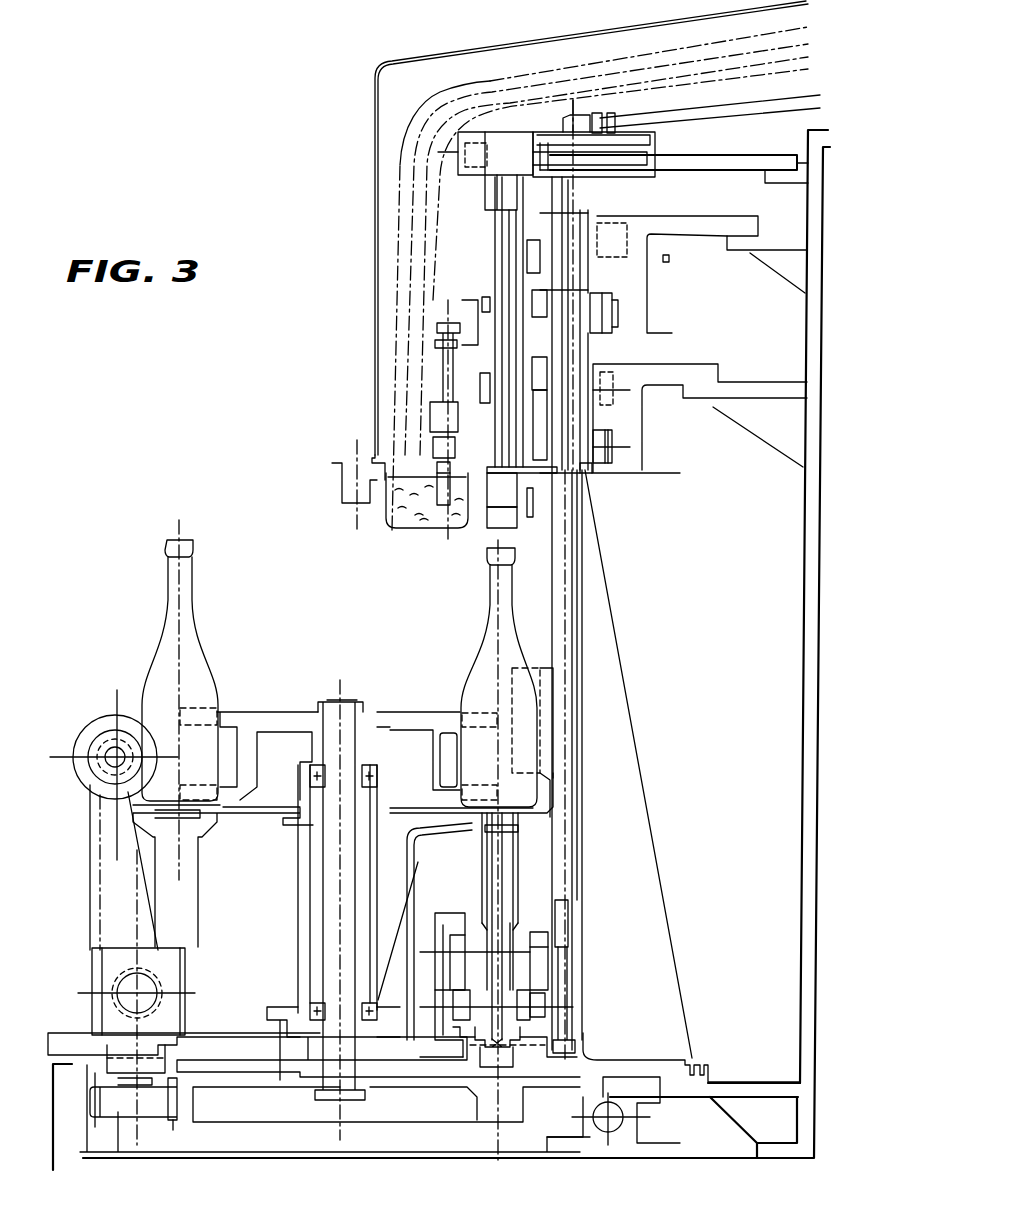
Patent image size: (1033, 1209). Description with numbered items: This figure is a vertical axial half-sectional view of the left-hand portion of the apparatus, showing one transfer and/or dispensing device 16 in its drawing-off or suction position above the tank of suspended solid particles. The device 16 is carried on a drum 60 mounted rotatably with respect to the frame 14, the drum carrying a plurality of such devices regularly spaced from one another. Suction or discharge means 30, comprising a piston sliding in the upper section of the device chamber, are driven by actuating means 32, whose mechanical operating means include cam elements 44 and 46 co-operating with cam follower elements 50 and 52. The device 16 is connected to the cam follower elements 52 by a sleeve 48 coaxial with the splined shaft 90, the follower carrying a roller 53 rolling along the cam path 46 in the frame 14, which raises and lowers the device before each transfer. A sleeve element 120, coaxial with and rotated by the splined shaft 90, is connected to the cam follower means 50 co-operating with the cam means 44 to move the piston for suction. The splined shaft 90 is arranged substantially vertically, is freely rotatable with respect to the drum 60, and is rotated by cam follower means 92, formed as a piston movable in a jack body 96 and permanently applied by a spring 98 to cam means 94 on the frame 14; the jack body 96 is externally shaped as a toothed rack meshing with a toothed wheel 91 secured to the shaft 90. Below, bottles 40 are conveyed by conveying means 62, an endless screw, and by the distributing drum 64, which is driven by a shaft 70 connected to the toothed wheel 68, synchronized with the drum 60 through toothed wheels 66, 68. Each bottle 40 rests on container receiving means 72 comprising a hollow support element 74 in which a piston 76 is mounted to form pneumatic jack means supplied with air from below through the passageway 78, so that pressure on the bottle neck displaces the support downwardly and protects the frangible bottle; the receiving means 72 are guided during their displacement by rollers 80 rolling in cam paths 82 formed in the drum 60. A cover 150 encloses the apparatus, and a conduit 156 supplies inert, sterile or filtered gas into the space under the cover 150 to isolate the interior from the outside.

The frame 14 is at (800, 583).
The transfer and/or dispensing device 16 is at (438, 440).
The suction or discharge means 30 is at (440, 377).
The actuating means 32 is at (586, 256).
The bottle 40 is at (197, 670).
The cam element 44 is at (620, 328).
The cam element 46 is at (613, 463).
The sleeve 48 is at (460, 453).
The cam follower element 50 is at (582, 307).
The cam follower element 52 is at (573, 467).
The roller 53 is at (614, 437).
The drum 60 is at (647, 1055).
The conveying means 62 is at (103, 723).
The distributing drum 64 is at (300, 710).
The toothed wheel 66 is at (147, 1103).
The toothed wheel 68 is at (177, 1112).
The shaft 70 is at (330, 938).
The container receiving means 72 is at (522, 869).
The hollow support element 74 is at (522, 843).
The spring 76 is at (502, 838).
The passageway 78 is at (507, 980).
The roller 80 is at (453, 1027).
The cam path 82 is at (466, 914).
The splined shaft 90 is at (500, 241).
The toothed wheel 91 is at (503, 148).
The cam follower means 92 is at (600, 155).
The cam means 94 is at (712, 160).
The jack body 96 is at (594, 118).
The spring 98 is at (553, 145).
The sleeve element 120 is at (472, 325).
The cover 150 is at (388, 62).
The conduit 156 is at (766, 52).